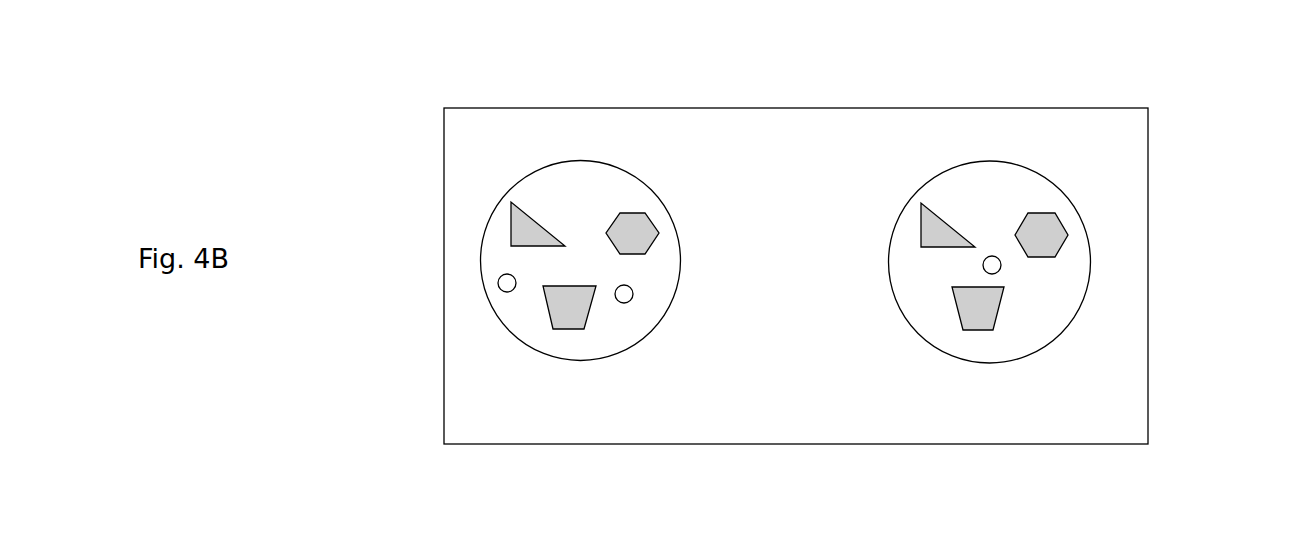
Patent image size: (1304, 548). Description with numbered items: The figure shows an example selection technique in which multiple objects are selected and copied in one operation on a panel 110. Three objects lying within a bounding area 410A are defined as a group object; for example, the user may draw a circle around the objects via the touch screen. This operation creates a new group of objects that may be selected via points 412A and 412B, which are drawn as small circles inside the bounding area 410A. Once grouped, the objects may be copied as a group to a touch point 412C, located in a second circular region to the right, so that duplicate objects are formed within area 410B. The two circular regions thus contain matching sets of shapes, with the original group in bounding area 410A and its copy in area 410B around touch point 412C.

The substrate / panel 110 is at (1148, 283).
The bounding area 410A is at (580, 160).
The area 410B is at (995, 162).
The point 412A is at (624, 303).
The point 412B is at (508, 292).
The touch point 412C is at (1001, 266).